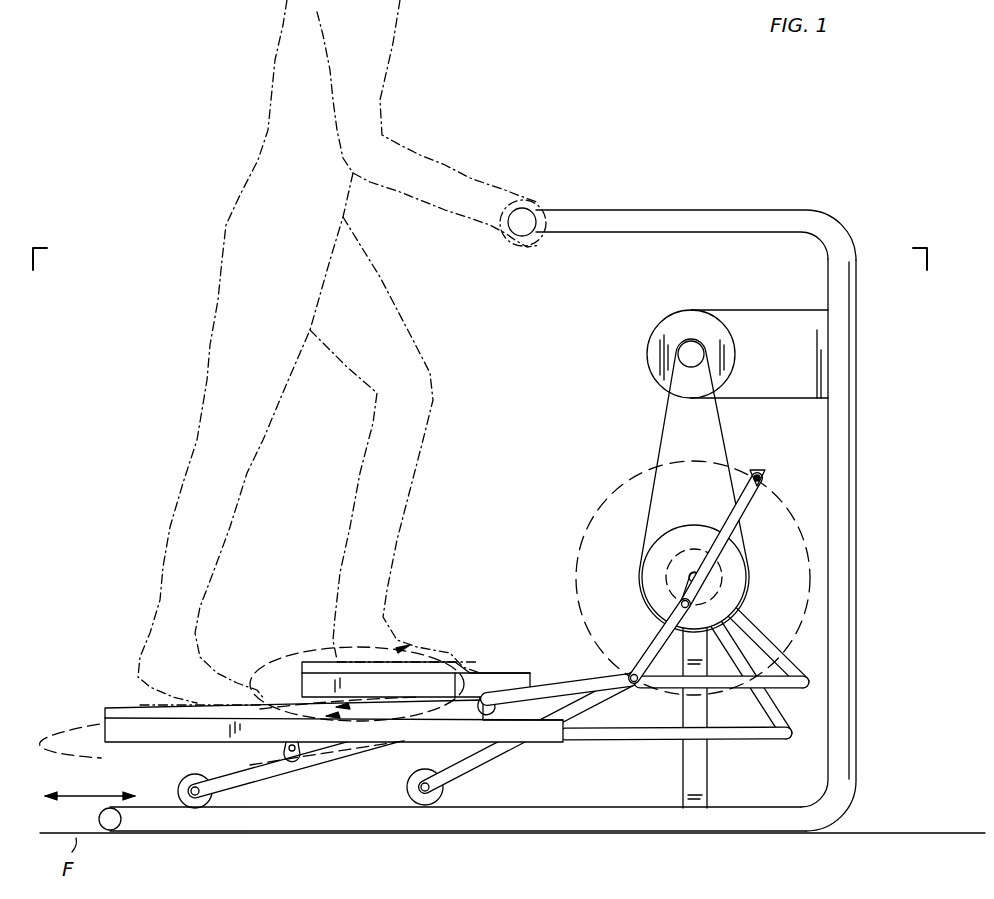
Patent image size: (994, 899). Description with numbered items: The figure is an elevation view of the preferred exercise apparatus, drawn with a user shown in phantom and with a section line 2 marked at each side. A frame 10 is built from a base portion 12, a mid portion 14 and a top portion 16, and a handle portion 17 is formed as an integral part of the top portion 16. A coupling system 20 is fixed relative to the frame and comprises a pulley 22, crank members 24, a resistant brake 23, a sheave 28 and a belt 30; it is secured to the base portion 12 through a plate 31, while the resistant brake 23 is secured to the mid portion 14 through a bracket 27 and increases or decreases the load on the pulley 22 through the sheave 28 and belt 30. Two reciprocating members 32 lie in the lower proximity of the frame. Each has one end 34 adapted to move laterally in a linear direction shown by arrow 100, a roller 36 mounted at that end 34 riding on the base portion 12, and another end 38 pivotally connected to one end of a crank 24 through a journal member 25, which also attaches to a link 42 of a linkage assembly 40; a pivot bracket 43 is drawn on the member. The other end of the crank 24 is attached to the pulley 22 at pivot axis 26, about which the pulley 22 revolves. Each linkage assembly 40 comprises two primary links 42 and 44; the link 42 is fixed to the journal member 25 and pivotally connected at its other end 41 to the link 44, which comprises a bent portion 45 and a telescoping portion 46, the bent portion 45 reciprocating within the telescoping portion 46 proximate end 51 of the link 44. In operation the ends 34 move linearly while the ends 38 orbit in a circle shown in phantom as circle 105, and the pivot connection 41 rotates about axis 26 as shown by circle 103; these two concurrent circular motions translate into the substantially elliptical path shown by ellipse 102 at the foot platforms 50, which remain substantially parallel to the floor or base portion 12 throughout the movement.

The section line 2- 2 is at (479, 273).
The frame 10 is at (878, 477).
The base portion 12 is at (697, 832).
The mid portion 14 is at (852, 428).
The top portion 16 is at (657, 209).
The handle portion 17 is at (522, 221).
The coupling system 20 is at (631, 559).
The pulley 22 is at (668, 536).
The resistant brake 23 is at (670, 331).
The crank 24 is at (747, 498).
The journal member 25 is at (758, 477).
The pivot axis 26 is at (692, 572).
The bracket 27 is at (805, 325).
The sheave 28 is at (691, 346).
The belt 30 is at (668, 425).
The plate 31 is at (700, 778).
The reciprocating member 32 is at (588, 695).
The end of reciprocating member 34 is at (228, 788).
The roller 36 is at (198, 806).
The other end of reciprocating member 38 is at (738, 505).
The linkage assembly 40 is at (740, 688).
The pivot connection 41 is at (752, 605).
The link 42 is at (600, 640).
The pivot bracket 43 is at (295, 758).
The link 44 is at (772, 648).
The bent portion 45 is at (792, 677).
The telescoping portion 46 is at (394, 717).
The foot platform 50 is at (127, 707).
The end of link 51 is at (113, 725).
The arrow 100 is at (83, 792).
The ellipse 102 is at (268, 675).
The circle 103 is at (718, 584).
The circle 105 is at (820, 556).